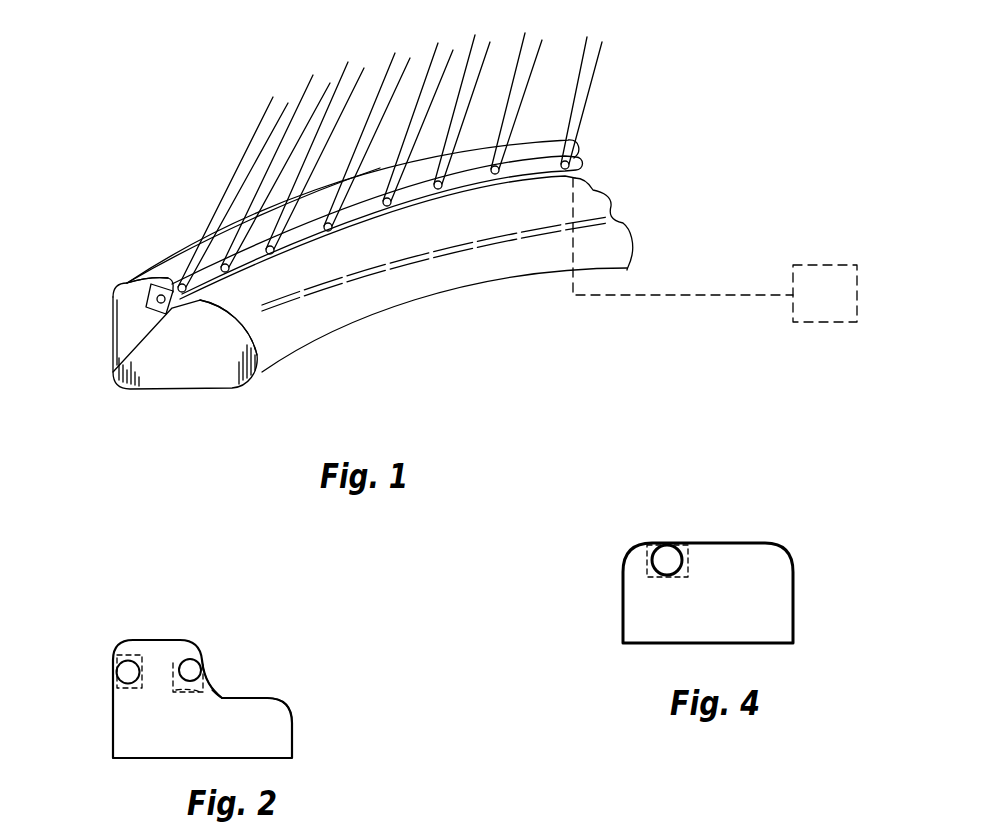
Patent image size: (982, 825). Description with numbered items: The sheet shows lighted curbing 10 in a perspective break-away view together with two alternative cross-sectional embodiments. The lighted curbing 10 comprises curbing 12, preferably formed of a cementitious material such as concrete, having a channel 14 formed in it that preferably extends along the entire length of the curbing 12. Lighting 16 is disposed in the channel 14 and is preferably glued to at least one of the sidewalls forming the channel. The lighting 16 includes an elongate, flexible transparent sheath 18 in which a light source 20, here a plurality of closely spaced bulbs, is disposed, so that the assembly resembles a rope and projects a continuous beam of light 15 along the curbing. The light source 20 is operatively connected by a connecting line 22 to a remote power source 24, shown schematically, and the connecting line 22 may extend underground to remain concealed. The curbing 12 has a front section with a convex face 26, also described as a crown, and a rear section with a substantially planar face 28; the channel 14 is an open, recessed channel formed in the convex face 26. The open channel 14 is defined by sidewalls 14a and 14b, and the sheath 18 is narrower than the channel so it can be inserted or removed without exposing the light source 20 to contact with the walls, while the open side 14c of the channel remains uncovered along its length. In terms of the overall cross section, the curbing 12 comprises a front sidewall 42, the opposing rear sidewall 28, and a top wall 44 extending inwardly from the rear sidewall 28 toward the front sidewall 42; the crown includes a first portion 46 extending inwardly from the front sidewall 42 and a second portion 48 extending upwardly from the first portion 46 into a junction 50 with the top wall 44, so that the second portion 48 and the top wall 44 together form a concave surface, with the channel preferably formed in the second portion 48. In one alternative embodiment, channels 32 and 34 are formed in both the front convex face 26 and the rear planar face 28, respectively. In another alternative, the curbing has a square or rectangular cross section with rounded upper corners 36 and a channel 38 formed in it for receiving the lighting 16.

In FIG. 1, the lighted curbing 10 is at (683, 140).
In FIG. 1, the curbing 12 is at (615, 250).
In FIG. 2, the curbing 12 is at (293, 752).
In FIG. 1, the channel 14 is at (118, 336).
In FIG. 1, the sidewall 14a is at (127, 282).
In FIG. 1, the sidewall 14b is at (163, 305).
In FIG. 1, the open side 14c is at (158, 268).
In FIG. 1, the continuous beam of light 15 is at (348, 62).
In FIG. 1, the lighting 16 is at (160, 305).
In FIG. 2, the lighting 16 is at (117, 666).
In FIG. 4, the lighting 16 is at (663, 550).
In FIG. 1, the sheath 18 is at (285, 248).
In FIG. 1, the light source 20 is at (345, 228).
In FIG. 1, the connecting line 22 is at (698, 297).
In FIG. 1, the remote power source 24 is at (833, 265).
In FIG. 1, the convex face 26 is at (233, 320).
In FIG. 2, the convex face 26 is at (213, 690).
In FIG. 1, the planar face 28 is at (113, 310).
In FIG. 2, the planar face 28 is at (108, 738).
In FIG. 2, the channel 32 is at (187, 686).
In FIG. 2, the channel 34 is at (123, 690).
In FIG. 4, the rounded upper corners 36 is at (632, 557).
In FIG. 4, the channel 38 is at (687, 563).
In FIG. 1, the front sidewall 42 is at (457, 277).
In FIG. 2, the front sidewall 42 is at (292, 727).
In FIG. 1, the top wall 44 is at (160, 268).
In FIG. 2, the top wall 44 is at (143, 640).
In FIG. 1, the first portion 46 is at (493, 219).
In FIG. 2, the first portion 46 is at (255, 698).
In FIG. 2, the second portion 48 is at (207, 675).
In FIG. 2, the junction 50 is at (193, 658).